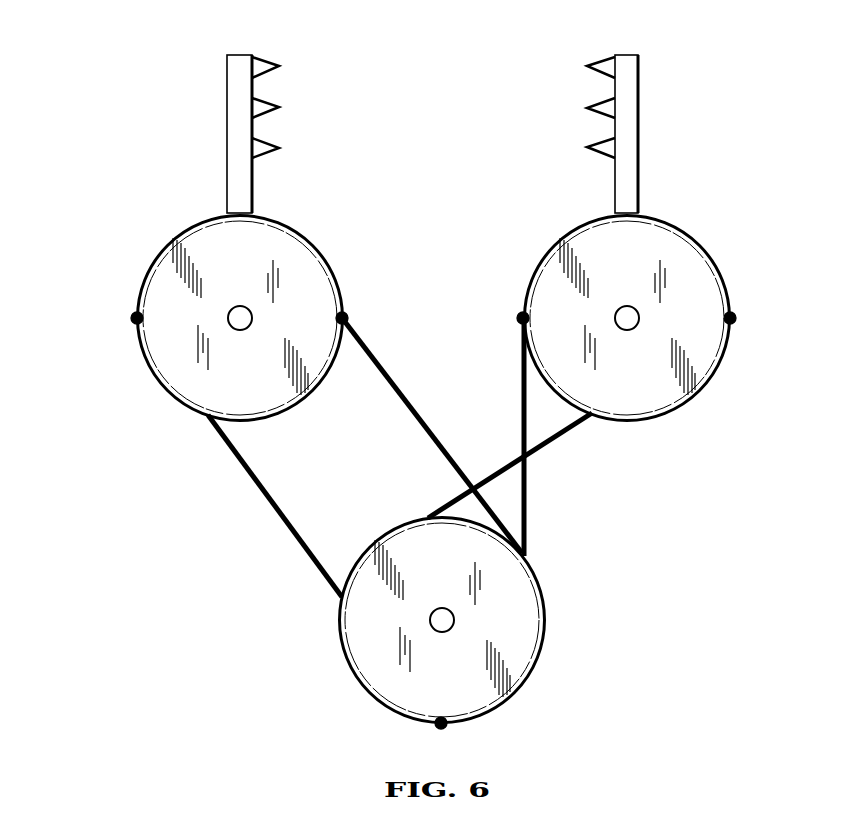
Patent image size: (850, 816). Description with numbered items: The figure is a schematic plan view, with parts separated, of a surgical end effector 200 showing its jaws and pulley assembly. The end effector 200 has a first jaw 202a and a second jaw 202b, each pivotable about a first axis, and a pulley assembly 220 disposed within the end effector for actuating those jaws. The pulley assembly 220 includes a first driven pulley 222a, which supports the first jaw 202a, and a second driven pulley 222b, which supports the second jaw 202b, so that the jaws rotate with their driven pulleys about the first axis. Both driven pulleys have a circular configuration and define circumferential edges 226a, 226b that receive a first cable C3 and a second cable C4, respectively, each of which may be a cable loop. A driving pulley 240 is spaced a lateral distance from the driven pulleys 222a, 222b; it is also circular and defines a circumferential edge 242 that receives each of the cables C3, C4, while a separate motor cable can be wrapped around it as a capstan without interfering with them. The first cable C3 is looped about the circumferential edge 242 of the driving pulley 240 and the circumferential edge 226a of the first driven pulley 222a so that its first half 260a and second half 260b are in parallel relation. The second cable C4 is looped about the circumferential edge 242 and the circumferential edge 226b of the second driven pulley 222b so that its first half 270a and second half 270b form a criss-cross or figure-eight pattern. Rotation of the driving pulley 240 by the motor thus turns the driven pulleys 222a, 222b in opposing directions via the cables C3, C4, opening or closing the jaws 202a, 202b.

The end effector 200 is at (94, 106).
The first jaw 202a is at (237, 108).
The second jaw 202b is at (633, 93).
The pulley assembly 220 is at (438, 200).
The first driven pulley 222a is at (152, 221).
The second driven pulley 222b is at (750, 285).
The circumferential edge 226a is at (157, 378).
The circumferential edge 226b is at (673, 408).
The driving pulley 240 is at (529, 700).
The circumferential edge 242 is at (363, 687).
The first half 260a is at (235, 455).
The second half 260b is at (385, 370).
The first half 270a is at (522, 422).
The second half 270b is at (572, 428).
The first cable C3 is at (286, 540).
The second cable C4 is at (544, 458).